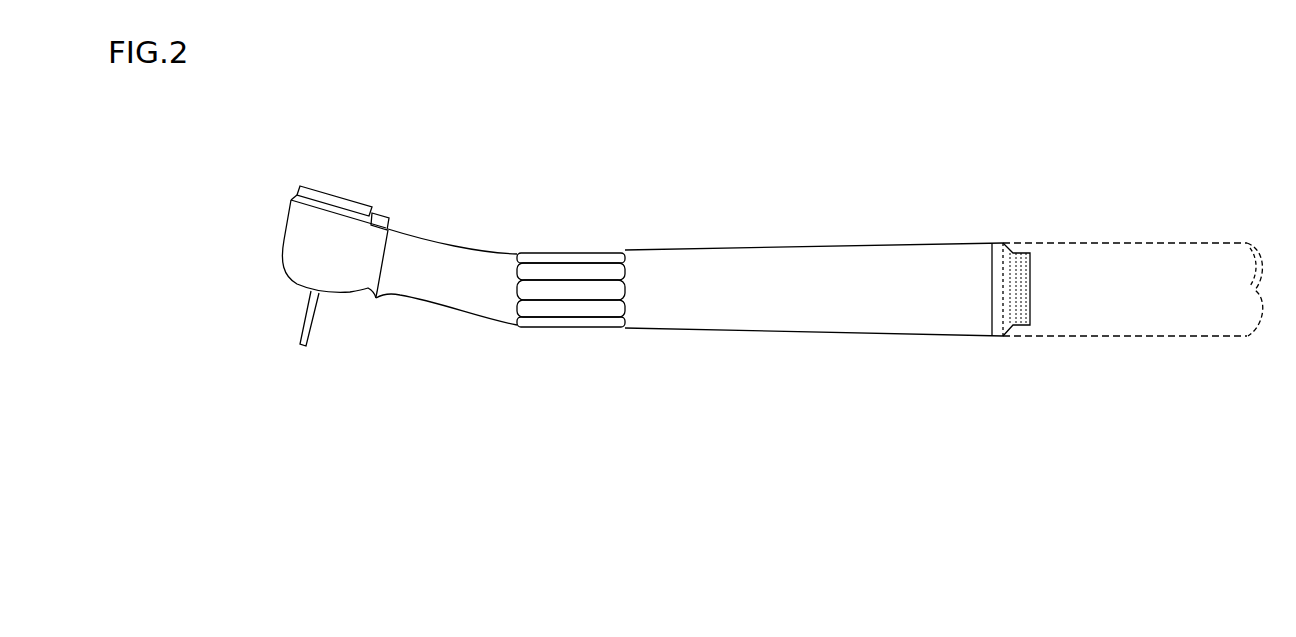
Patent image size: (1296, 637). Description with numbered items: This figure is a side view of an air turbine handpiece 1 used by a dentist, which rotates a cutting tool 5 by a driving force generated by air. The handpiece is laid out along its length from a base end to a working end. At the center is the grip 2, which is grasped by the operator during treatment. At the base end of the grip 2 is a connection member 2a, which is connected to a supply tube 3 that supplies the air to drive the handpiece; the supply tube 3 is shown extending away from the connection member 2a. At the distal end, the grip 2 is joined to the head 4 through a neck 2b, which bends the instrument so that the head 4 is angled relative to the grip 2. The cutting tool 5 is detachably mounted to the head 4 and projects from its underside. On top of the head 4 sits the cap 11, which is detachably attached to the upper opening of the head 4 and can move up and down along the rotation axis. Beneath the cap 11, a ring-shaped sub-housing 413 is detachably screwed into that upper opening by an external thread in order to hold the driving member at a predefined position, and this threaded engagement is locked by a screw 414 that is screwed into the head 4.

The air turbine handpiece 1 is at (852, 180).
The grip 2 is at (545, 280).
The connection member 2a is at (1018, 330).
The neck 2b is at (430, 258).
The supply tube 3 is at (1130, 265).
The head 4 is at (297, 235).
The cutting tool 5 is at (313, 330).
The cap 11 is at (340, 192).
The sub-housing 413 is at (292, 196).
The screw 414 is at (386, 222).